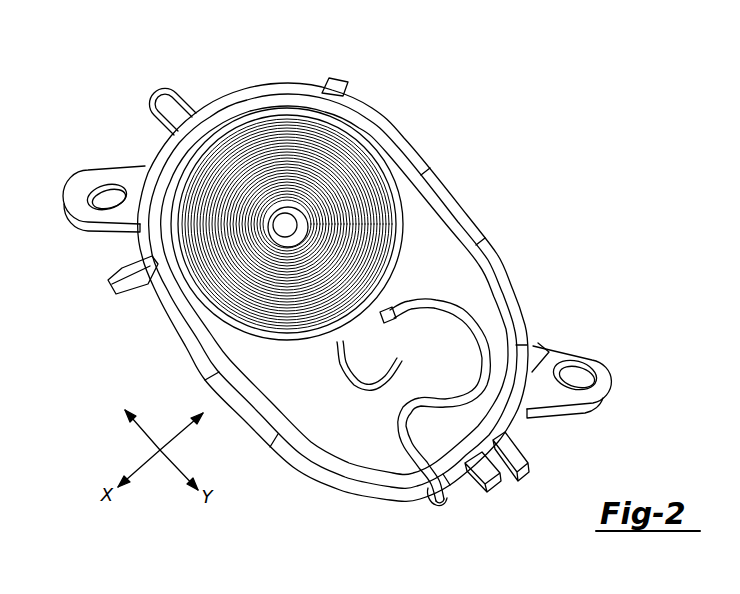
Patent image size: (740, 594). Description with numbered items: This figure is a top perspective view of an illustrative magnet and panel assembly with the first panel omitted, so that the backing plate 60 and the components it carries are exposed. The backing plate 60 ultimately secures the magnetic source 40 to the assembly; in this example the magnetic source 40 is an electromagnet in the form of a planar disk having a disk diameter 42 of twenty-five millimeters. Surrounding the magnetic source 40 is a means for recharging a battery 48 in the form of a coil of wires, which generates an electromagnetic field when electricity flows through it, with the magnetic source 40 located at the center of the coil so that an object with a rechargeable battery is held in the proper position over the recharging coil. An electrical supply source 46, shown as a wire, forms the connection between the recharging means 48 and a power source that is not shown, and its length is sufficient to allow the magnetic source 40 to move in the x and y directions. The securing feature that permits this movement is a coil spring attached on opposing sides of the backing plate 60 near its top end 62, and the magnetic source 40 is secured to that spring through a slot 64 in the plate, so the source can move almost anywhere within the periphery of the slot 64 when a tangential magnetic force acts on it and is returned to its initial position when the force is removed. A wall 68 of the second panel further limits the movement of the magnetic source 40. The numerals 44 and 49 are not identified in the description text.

The magnetic source 40 is at (299, 212).
The disk diameter 42 is at (216, 237).
The coil mounting ring 44 is at (243, 340).
The electrical supply source 46 is at (540, 343).
The means for recharging a battery 48 is at (281, 137).
The wire end 49 is at (437, 508).
The backing plate 60 is at (523, 305).
The top end 62 is at (403, 143).
The slot 64 is at (413, 297).
The wall 68 is at (507, 262).